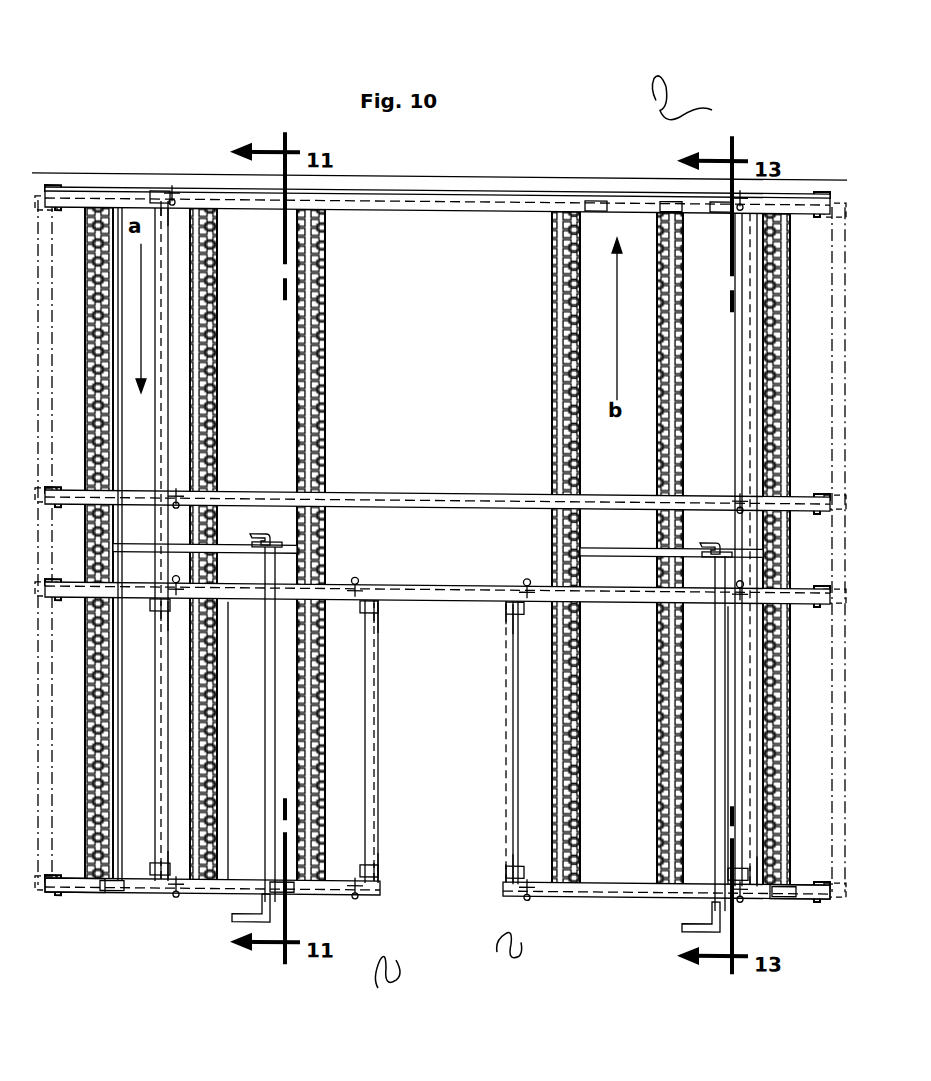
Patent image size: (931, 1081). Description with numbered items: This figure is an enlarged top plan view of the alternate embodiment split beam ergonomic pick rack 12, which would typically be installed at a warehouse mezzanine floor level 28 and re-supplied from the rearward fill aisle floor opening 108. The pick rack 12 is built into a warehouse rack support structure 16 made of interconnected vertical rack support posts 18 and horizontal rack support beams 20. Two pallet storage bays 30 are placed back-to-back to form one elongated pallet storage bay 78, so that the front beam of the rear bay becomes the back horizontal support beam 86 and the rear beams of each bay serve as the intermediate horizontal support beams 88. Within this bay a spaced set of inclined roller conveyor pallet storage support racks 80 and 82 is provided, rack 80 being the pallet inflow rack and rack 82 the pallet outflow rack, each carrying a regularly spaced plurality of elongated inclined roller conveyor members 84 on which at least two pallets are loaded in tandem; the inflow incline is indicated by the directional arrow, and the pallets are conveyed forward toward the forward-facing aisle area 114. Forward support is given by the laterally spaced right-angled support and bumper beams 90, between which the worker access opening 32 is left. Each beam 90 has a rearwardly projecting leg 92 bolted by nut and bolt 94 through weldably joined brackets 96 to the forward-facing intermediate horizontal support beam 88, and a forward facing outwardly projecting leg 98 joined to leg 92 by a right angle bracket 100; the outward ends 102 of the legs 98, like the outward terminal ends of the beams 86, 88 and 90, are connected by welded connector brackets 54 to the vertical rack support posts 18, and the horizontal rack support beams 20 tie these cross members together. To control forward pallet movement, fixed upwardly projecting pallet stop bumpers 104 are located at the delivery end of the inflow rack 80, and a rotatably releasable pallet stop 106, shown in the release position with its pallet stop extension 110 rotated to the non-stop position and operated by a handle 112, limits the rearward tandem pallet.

The alternate embodiment split beam ergonomic pick rack 12 is at (510, 105).
The warehouse rack support structure 16 is at (788, 100).
The vertical rack support post 18 is at (42, 195).
The horizontal rack support beam 20 is at (113, 400).
The warehouse mezzanine floor level 28 is at (520, 960).
The pallet storage bay 30 is at (552, 165).
The worker access opening 32 is at (455, 862).
The connector bracket 54 is at (58, 190).
The elongated pallet storage bay 78 is at (512, 150).
The inclined roller conveyor pallet storage support rack 80 is at (160, 930).
The inclined roller conveyor pallet storage support rack 82 is at (648, 935).
The elongated inclined roller conveyor member 84 is at (330, 320).
The back horizontal support beam 86 is at (443, 207).
The intermediate horizontal support beam 88 is at (436, 490).
The right-angled support and bumper beam 90 is at (235, 892).
The rearwardly projecting leg 92 is at (157, 440).
The nut and bolt 94 is at (176, 185).
The bracket 96 is at (158, 192).
The forward facing outwardly projecting leg 98 is at (162, 198).
The right angle bracket 100 is at (166, 205).
The outward end 102 is at (95, 893).
The pallet stop bumper 104 is at (596, 196).
The rotatably releasable pallet stop 106 is at (265, 740).
The rearward fill aisle floor opening 108 is at (704, 95).
The pallet stop extension 110 is at (258, 530).
The handle 112 is at (240, 920).
The forward-facing aisle area 114 is at (380, 990).